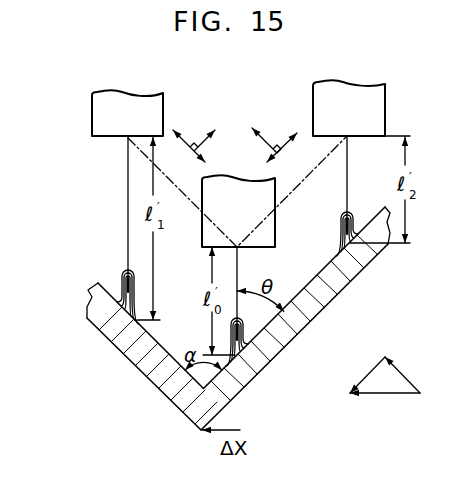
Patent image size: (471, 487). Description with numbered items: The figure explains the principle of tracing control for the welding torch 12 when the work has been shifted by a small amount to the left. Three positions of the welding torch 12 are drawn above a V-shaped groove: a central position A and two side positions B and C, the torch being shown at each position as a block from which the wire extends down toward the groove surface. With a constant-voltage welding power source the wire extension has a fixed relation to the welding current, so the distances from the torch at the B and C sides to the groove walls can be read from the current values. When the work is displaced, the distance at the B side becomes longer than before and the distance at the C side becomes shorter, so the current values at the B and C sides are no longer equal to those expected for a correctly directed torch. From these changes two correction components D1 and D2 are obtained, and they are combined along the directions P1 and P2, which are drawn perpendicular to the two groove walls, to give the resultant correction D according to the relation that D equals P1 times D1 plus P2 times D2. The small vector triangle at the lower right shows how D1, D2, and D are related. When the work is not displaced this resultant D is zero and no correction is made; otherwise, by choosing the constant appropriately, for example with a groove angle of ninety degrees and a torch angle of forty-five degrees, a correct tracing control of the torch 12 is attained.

The welding torch 12 is at (235, 148).
The torch position A is at (243, 186).
The B side torch position B is at (117, 100).
The C side torch position C is at (362, 90).
The direction P1 is at (194, 133).
The direction P2 is at (274, 133).
The first correction component D1 is at (364, 375).
The second correction component D2 is at (409, 375).
The resultant correction D is at (385, 406).